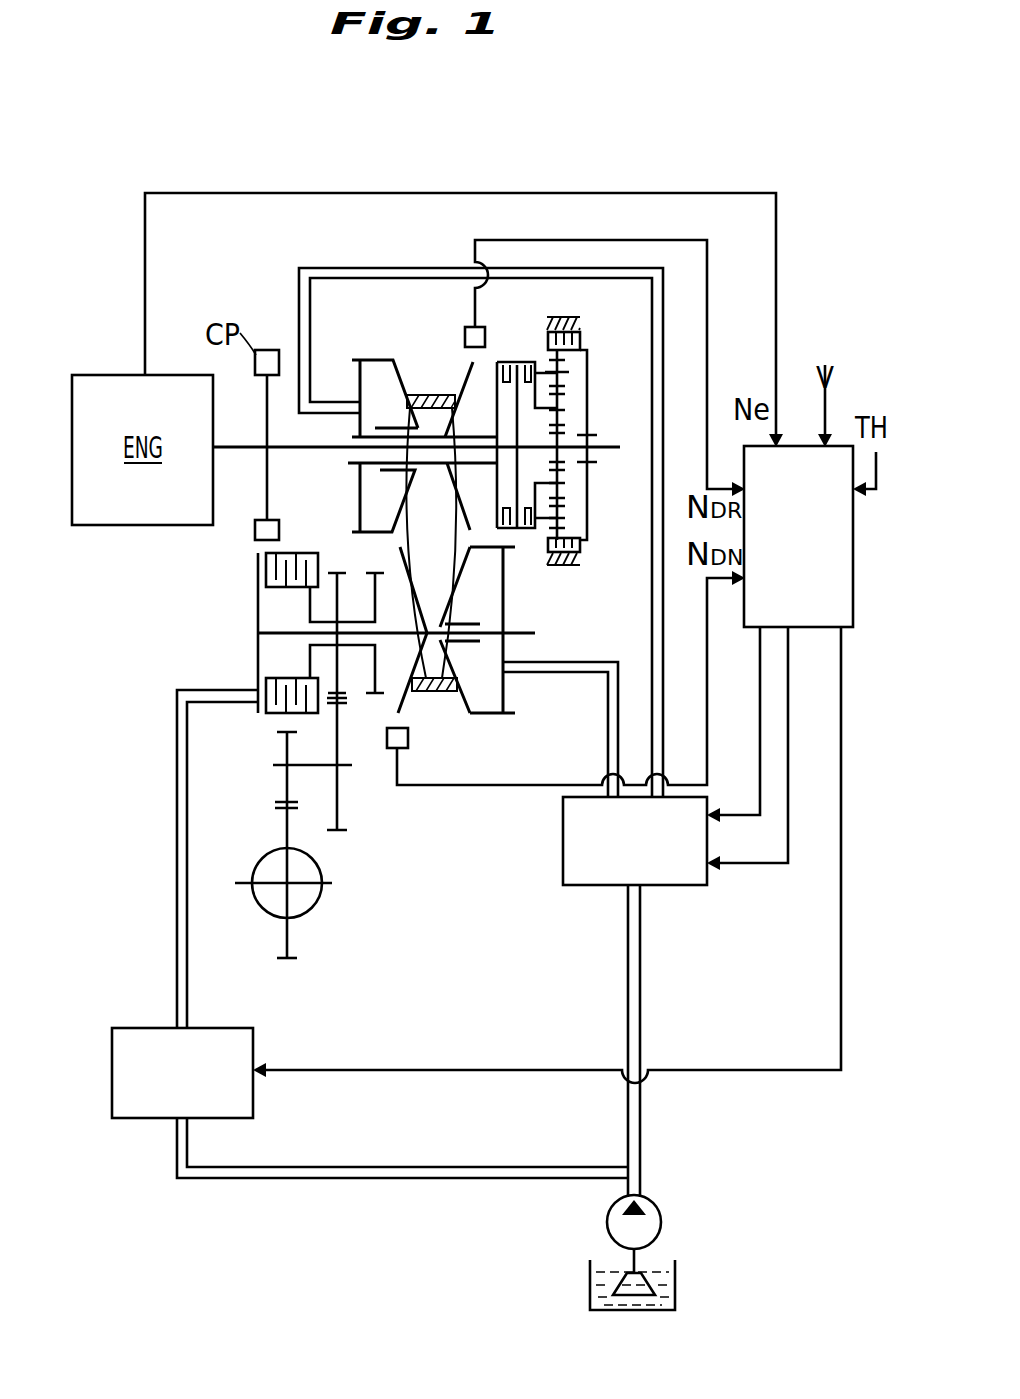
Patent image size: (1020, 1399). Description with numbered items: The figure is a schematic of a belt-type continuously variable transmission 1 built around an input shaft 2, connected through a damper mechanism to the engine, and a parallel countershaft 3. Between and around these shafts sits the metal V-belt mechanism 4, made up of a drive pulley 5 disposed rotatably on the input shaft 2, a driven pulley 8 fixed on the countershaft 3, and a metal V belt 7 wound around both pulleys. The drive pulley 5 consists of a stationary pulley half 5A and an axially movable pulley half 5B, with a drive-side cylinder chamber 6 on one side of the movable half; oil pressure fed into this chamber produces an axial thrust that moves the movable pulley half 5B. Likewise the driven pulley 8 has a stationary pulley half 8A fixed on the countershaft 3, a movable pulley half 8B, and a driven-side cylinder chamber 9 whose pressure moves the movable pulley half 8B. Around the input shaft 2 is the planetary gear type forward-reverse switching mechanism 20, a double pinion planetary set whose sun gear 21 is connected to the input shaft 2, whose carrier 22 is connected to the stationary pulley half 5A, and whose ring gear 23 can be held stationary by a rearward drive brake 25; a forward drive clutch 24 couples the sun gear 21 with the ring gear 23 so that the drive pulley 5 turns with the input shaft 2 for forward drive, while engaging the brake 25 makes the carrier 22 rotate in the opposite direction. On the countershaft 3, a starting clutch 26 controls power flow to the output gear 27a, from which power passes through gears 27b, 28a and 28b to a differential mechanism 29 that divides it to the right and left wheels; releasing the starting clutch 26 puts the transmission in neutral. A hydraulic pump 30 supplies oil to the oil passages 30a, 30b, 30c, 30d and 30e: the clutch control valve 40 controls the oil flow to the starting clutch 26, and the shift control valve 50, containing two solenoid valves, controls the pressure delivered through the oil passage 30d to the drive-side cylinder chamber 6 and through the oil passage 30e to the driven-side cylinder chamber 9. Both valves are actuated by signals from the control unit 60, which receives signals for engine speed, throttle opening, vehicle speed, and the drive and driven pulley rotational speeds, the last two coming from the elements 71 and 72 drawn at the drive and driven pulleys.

The belt-type continuously variable transmission 1 is at (652, 164).
The input shaft 2 is at (605, 447).
The countershaft 3 is at (522, 633).
The metal V-belt mechanism 4 is at (446, 533).
The drive pulley 5 is at (413, 417).
The stationary pulley half 5A is at (467, 377).
The movable pulley half 5B is at (376, 358).
The drive-side cylinder chamber 6 is at (389, 415).
The metal V belt 7 is at (443, 543).
The driven pulley 8 is at (468, 656).
The stationary pulley half 8A is at (412, 676).
The movable pulley half 8B is at (504, 715).
The driven-side cylinder chamber 9 is at (488, 683).
The planetary gear type forward-reverse switching mechanism 20 is at (568, 447).
The sun gear 21 is at (562, 438).
The carrier 22 is at (562, 476).
The ring gear 23 is at (582, 555).
The forward drive clutch 24 is at (500, 362).
The rearward drive brake 25 is at (582, 341).
The starting clutch 26 is at (297, 553).
The gear 27a is at (336, 573).
The gear 27b is at (342, 832).
The gear 28a is at (253, 842).
The gear 28b is at (290, 962).
The differential mechanism 29 is at (318, 905).
The hydraulic pump 30 is at (660, 1225).
The oil passage 30a is at (377, 1167).
The oil passage 30b is at (177, 858).
The oil passage 30c is at (642, 1142).
The oil passage 30d is at (383, 268).
The oil passage 30e is at (578, 660).
The clutch control valve 40 is at (156, 1028).
The shift control valve 50 is at (563, 838).
The control unit 60 is at (832, 627).
The drive pulley rotational speed sensor 71 is at (487, 333).
The driven pulley rotational speed sensor 72 is at (409, 738).